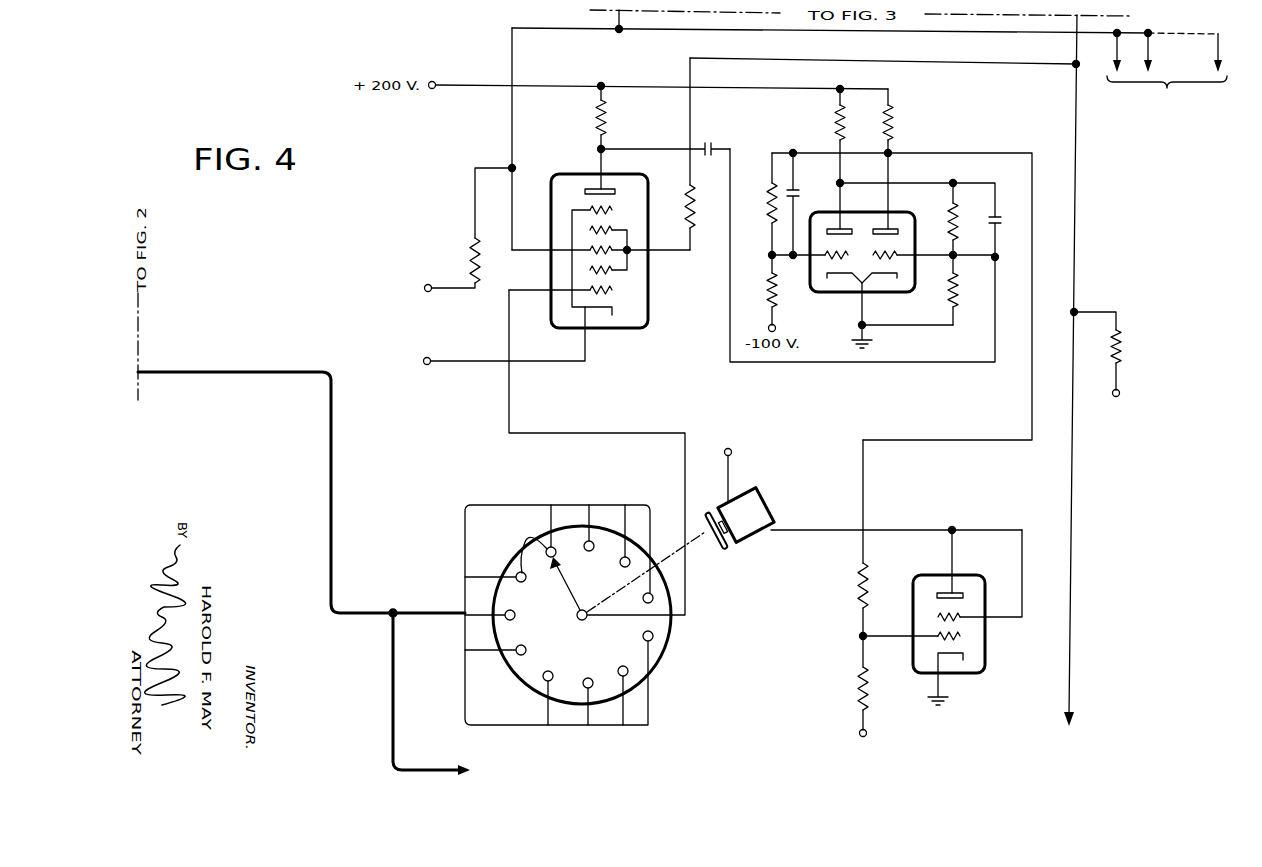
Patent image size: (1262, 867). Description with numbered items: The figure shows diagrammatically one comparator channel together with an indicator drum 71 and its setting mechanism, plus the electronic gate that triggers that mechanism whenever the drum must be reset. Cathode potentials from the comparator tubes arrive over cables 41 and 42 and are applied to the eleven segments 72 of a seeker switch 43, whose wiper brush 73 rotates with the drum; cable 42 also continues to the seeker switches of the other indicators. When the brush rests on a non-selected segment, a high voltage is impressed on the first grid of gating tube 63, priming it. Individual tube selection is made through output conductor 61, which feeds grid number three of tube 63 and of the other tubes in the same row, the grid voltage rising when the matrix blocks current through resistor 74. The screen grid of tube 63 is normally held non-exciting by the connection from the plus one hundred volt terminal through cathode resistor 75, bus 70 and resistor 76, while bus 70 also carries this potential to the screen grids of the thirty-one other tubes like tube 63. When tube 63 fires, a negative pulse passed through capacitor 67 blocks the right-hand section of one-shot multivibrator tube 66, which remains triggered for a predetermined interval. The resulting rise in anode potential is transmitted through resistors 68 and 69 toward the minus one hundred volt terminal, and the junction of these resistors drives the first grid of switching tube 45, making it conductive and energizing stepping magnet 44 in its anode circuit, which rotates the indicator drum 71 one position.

The cable 41 is at (255, 371).
The cable 42 is at (395, 694).
The seeker switch 43 is at (650, 500).
The stepping magnet 44 is at (767, 500).
The switching tube 45 is at (935, 575).
The output conductor 61 is at (1013, 35).
The gating tube 63 is at (568, 172).
The one-shot multivibrator tube 66 is at (848, 292).
The capacitor 67 is at (712, 128).
The resistor 68 is at (856, 590).
The resistor 69 is at (856, 690).
The bus 70 is at (1076, 257).
The indicator drum 71 is at (664, 648).
The segments 72 is at (525, 548).
The wiper brush 73 is at (566, 592).
The resistor 74 is at (470, 262).
The cathode resistor 75 is at (1122, 350).
The resistor 76 is at (696, 200).